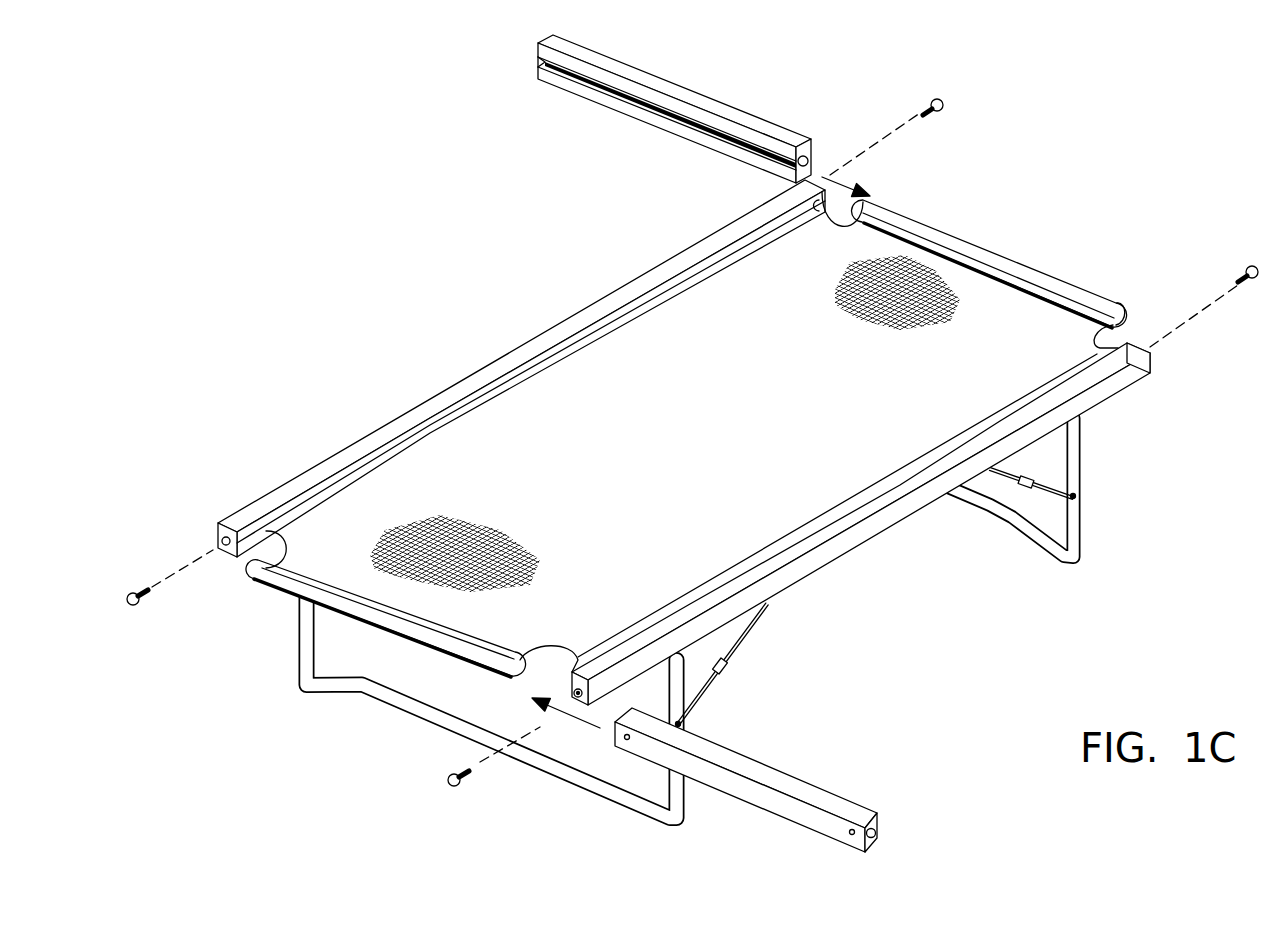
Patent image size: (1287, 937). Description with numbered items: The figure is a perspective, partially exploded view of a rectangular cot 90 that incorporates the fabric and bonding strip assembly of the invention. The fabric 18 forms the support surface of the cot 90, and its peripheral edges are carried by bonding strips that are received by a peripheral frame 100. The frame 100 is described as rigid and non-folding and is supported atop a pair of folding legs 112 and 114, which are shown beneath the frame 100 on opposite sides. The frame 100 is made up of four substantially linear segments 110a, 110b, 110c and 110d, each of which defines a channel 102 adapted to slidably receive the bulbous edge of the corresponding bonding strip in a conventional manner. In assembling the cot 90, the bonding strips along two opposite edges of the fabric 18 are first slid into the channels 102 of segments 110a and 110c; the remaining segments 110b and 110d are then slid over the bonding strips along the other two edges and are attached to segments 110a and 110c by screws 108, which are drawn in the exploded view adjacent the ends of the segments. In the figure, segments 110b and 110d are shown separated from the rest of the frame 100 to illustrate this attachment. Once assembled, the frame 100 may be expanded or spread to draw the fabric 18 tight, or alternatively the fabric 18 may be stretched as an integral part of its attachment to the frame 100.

The cot 90 is at (411, 203).
The peripheral frame 100 is at (684, 442).
The fabric 18 is at (753, 538).
The channel 102 is at (810, 160).
The screws 108 is at (946, 100).
The frame segment 110a is at (402, 420).
The frame segment 110b is at (672, 93).
The frame segment 110c is at (913, 506).
The frame segment 110d is at (785, 805).
The folding leg 112 is at (614, 784).
The folding leg 114 is at (1072, 526).